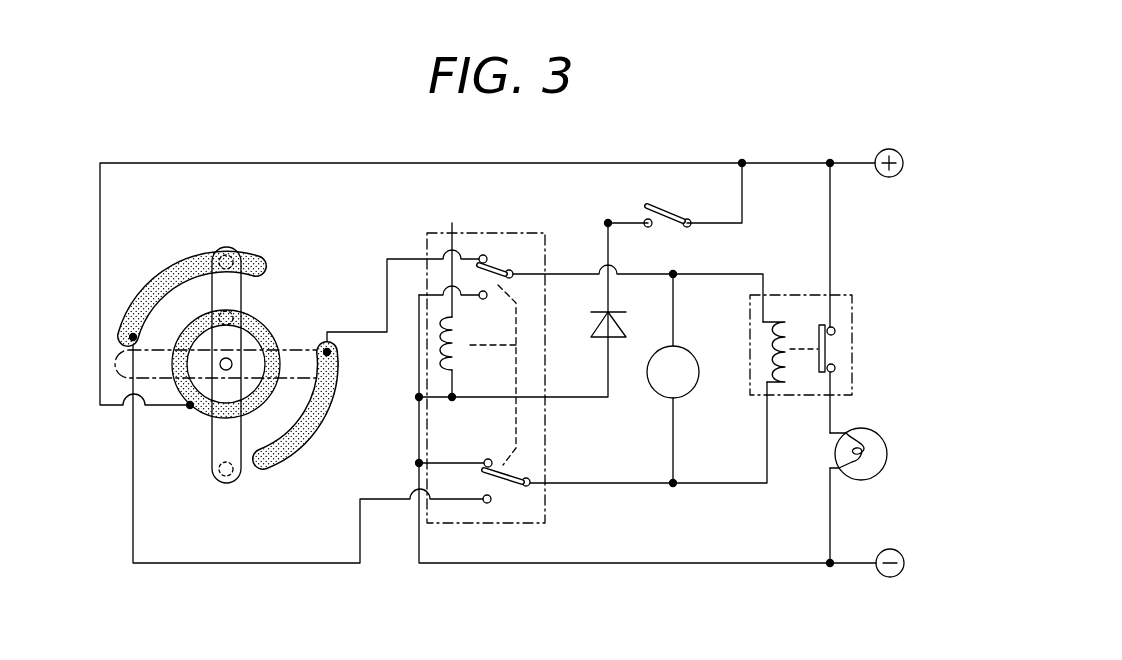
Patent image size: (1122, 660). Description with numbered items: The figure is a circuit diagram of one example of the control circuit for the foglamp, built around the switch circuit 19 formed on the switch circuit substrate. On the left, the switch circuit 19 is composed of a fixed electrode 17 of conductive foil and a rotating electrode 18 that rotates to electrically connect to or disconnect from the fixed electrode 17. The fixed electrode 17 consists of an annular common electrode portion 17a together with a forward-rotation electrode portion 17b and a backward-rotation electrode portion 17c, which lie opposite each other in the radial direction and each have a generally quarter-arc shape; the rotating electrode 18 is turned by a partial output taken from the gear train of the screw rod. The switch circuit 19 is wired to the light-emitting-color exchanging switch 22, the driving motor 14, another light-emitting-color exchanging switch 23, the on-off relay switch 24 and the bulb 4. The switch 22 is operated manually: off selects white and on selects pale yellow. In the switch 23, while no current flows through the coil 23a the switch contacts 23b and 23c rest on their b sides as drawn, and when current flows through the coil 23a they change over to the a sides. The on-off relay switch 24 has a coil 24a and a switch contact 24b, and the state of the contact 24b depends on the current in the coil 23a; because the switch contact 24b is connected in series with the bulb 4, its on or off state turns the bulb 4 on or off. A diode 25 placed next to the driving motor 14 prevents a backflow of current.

The bulb 4 is at (874, 450).
The driving motor 14 is at (683, 400).
The fixed electrode 17 is at (291, 465).
The annular common electrode portion 17a is at (253, 315).
The forward-rotation electrode portion 17b is at (168, 276).
The backward-rotation electrode portion 17c is at (336, 397).
The rotating electrode 18 is at (217, 477).
The switch circuit 19 is at (253, 240).
The light-emitting-color exchanging switch 22 is at (662, 198).
The light-emitting-color exchanging switch 23 is at (512, 525).
The coil 23a is at (463, 356).
The switch contact 23b is at (473, 243).
The switch contact 23c is at (522, 493).
The on-off relay switch 24 is at (813, 294).
The relay coil 24a is at (772, 388).
The switch contact 24b is at (838, 352).
The diode 25 is at (604, 331).